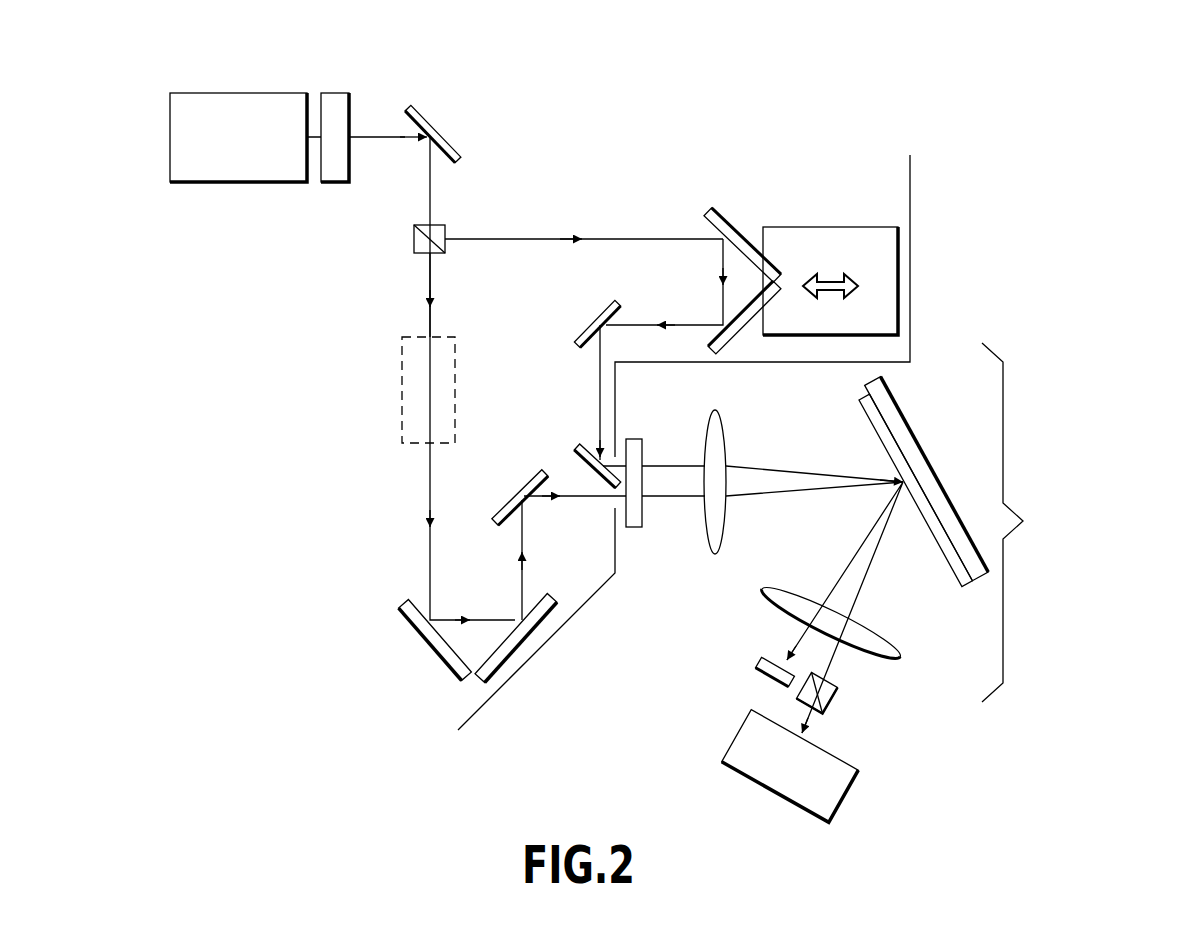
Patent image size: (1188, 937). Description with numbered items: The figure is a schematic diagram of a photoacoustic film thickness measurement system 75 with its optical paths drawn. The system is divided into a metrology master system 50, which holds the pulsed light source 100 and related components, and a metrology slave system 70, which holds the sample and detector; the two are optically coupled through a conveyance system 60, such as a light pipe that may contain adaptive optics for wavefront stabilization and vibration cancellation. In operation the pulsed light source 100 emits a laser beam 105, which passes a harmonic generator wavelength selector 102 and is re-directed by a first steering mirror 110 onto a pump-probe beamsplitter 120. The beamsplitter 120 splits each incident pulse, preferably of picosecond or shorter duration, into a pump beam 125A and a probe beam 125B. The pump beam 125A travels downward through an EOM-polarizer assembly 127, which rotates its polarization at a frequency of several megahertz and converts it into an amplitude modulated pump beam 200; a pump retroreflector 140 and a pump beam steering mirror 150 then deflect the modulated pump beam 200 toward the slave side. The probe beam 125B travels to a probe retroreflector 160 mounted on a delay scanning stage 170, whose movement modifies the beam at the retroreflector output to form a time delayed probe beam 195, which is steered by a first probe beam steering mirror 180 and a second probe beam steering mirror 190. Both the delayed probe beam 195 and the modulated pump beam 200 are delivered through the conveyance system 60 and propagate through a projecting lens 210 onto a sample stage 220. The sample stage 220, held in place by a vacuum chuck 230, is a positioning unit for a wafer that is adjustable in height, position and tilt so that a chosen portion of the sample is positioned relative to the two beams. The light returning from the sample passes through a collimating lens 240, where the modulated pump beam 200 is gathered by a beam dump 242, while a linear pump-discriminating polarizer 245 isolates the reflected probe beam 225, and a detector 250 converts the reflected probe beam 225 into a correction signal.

The metrology master system 50 is at (364, 527).
The conveyance system 60 is at (611, 501).
The metrology slave system 70 is at (1061, 522).
The photoacoustic film thickness measurement system 75 is at (930, 80).
The pulsed light source 100 is at (197, 93).
The harmonic generator wavelength selector 102 is at (330, 93).
The laser beam 105 is at (363, 136).
The first steering mirror 110 is at (436, 126).
The pump-probe beamsplitter 120 is at (416, 234).
The pump beam 125A is at (427, 275).
The probe beam 125B is at (501, 237).
The EOM-polarizer assembly 127 is at (401, 388).
The pump retroreflector 140 is at (432, 648).
The pump beam steering mirror 150 is at (517, 492).
The probe retroreflector 160 is at (726, 211).
The delay scanning stage 170 is at (828, 227).
The first probe beam steering mirror 180 is at (604, 306).
The second probe beam steering mirror 190 is at (578, 458).
The time delayed probe beam 195 is at (660, 465).
The amplitude modulated pump beam 200 is at (662, 497).
The projecting lens 210 is at (718, 410).
The sample stage 220 is at (876, 427).
The reflected probe beam 225 is at (868, 575).
The vacuum chuck 230 is at (908, 417).
The collimating lens 240 is at (781, 613).
The beam dump 242 is at (759, 678).
The linear pump-discriminating polarizer 245 is at (830, 708).
The detector 250 is at (756, 780).